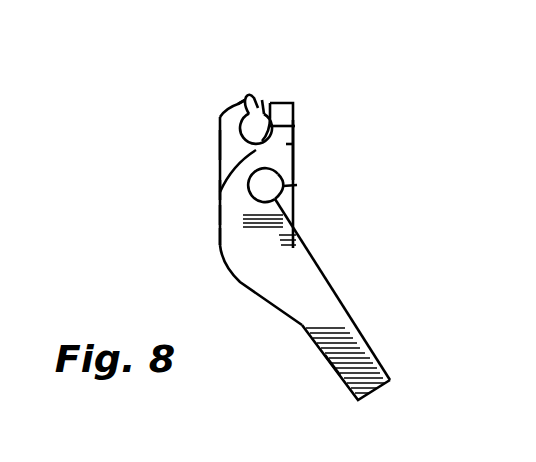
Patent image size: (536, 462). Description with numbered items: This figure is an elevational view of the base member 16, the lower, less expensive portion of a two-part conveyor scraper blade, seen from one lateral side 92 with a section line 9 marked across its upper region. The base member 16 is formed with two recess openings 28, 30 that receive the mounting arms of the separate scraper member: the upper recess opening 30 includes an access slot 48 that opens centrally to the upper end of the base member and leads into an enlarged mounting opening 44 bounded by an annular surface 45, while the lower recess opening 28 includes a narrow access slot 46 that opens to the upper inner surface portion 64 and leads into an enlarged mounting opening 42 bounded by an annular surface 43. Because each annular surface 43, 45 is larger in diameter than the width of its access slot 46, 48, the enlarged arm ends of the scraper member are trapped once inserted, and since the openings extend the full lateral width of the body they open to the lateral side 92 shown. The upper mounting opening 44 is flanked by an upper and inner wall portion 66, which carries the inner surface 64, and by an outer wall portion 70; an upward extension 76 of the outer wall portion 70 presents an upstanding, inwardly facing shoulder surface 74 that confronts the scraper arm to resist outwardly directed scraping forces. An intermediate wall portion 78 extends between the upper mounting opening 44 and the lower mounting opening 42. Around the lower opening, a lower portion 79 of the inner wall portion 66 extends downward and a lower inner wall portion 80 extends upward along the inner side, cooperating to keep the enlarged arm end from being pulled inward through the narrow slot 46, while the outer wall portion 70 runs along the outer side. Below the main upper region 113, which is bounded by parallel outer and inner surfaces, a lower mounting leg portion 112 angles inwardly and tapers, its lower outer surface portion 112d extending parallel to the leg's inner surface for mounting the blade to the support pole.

The section line 9- 9 is at (200, 57).
The base member 16 is at (408, 137).
The recess opening 28 is at (322, 182).
The recess opening 30 is at (283, 80).
The mounting opening 42 is at (290, 195).
The annular surface 43 is at (220, 235).
The mounting opening 44 is at (294, 126).
The annular surface 45 is at (220, 117).
The access slot 46 is at (297, 185).
The access slot 48 is at (262, 104).
The upper inner surface portion 64 is at (294, 104).
The upper and inner wall portion 66 is at (294, 144).
The outer wall portion 70 is at (220, 212).
The shoulder surface 74 is at (258, 108).
The upward extension 76 is at (228, 103).
The intermediate wall portion 78 is at (220, 190).
The lower portion of inner wall portion 79 is at (283, 173).
The lower inner wall portion 80 is at (293, 192).
The lateral side 92 is at (292, 285).
The lower mounting leg portion 112 is at (360, 338).
The lower outer surface portion 112d is at (330, 360).
The upper region 113 is at (112, 225).